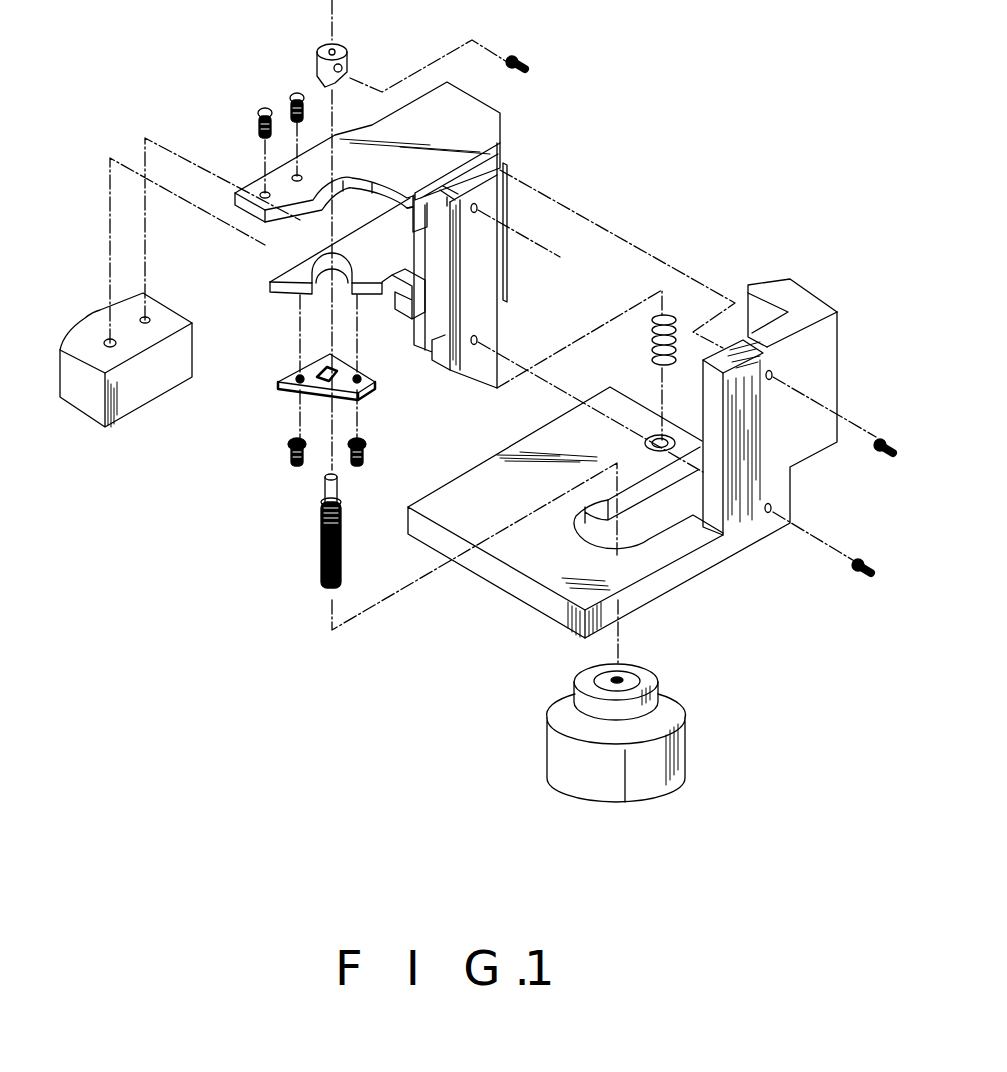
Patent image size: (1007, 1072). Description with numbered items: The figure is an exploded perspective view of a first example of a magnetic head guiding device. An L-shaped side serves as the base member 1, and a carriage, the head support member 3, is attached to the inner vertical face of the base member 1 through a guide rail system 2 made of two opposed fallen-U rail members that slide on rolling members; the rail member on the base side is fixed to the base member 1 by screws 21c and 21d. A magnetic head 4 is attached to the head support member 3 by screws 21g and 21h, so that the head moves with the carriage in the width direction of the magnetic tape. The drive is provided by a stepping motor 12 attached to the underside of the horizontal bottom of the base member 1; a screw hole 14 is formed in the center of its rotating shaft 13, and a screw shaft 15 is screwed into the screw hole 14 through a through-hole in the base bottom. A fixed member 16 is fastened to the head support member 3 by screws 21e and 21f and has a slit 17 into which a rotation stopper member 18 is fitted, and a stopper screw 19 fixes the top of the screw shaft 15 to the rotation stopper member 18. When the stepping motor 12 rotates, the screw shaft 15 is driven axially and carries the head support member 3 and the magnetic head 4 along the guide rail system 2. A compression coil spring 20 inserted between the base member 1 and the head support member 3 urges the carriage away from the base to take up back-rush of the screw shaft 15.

The base member 1 is at (838, 357).
The guide rail system 2 is at (505, 182).
The head support member 3 is at (505, 123).
The magnetic head 4 is at (105, 427).
The stepping motor 12 is at (620, 724).
The rotating shaft 13 is at (608, 683).
The screw hole 14 is at (637, 675).
The screw shaft 15 is at (320, 547).
The fixed member 16 is at (339, 379).
The slit 17 is at (318, 368).
The rotation stopper member 18 is at (350, 57).
The stopper screw 19 is at (525, 60).
The compression coil spring 20 is at (650, 345).
The screw 21c is at (885, 458).
The screw 21d is at (862, 578).
The screw 21e is at (288, 450).
The screw 21f is at (366, 450).
The screw 21g is at (260, 110).
The screw 21h is at (294, 95).